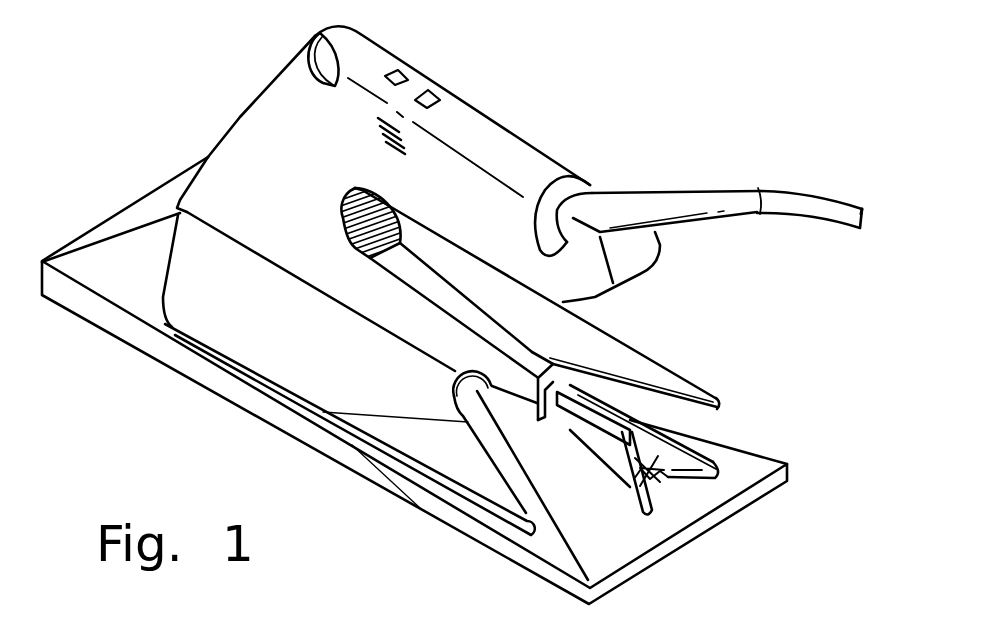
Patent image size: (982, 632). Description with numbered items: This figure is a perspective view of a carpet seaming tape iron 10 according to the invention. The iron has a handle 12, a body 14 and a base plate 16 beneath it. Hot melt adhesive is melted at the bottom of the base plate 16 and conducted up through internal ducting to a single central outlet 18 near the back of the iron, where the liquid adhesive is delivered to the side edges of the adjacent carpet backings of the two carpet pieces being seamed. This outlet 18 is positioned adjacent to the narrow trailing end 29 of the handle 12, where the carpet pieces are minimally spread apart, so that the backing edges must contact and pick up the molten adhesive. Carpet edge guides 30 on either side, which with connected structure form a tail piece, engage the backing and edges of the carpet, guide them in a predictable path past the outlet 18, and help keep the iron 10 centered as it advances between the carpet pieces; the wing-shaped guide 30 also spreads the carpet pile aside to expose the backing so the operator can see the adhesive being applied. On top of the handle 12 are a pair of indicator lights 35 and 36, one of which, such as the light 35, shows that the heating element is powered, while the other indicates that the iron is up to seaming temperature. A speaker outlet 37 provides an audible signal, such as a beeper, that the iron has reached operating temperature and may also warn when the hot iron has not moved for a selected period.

The carpet seaming tape iron 10 is at (656, 83).
The handle 12 is at (477, 121).
The body 14 is at (207, 158).
The base plate 16 is at (110, 334).
The central outlet 18 is at (660, 500).
The trailing end 29 is at (555, 367).
The carpet edge guides 30 is at (647, 452).
The indicator light 35 is at (401, 72).
The indicator light 36 is at (429, 93).
The speaker outlet 37 is at (378, 137).